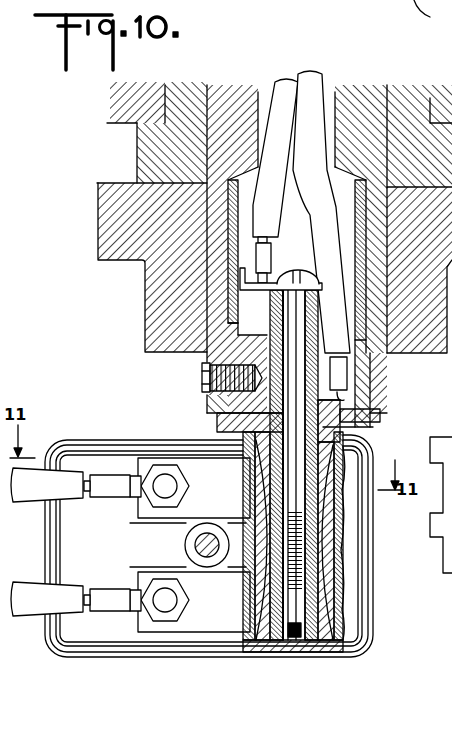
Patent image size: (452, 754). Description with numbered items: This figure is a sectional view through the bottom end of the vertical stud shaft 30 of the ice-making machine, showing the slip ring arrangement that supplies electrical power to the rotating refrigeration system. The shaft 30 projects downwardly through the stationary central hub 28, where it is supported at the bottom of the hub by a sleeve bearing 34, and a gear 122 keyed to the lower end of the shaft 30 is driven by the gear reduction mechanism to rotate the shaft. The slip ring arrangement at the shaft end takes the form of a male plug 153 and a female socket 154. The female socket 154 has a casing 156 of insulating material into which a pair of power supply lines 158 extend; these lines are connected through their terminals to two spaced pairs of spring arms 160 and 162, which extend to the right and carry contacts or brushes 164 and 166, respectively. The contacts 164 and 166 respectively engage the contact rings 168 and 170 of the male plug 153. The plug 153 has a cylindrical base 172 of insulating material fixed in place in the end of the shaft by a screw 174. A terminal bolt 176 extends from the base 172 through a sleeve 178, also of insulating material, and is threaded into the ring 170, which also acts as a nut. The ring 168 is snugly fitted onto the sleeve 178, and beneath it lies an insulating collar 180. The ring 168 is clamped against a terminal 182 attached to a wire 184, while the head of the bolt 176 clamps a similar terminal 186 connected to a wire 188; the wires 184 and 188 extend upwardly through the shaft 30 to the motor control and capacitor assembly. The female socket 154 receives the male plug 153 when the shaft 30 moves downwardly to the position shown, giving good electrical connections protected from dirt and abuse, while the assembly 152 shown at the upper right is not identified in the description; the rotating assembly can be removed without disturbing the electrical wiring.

The central hub 28 is at (137, 97).
The stud shaft 30 is at (239, 110).
The sleeve bearing 34 is at (152, 146).
The gear 122 is at (126, 231).
The assembly 152 is at (433, 13).
The male plug 153 is at (412, 424).
The female socket 154 is at (42, 649).
The casing 156 is at (96, 440).
The power supply lines 158 is at (32, 484).
The spring arms 160 is at (200, 505).
The spring arms 162 is at (200, 614).
The contact 164 is at (297, 498).
The contact 166 is at (306, 592).
The contact ring 168 is at (342, 430).
The contact ring 170 is at (319, 627).
The cylindrical base 172 is at (232, 345).
The screw 174 is at (206, 378).
The terminal bolt 176 is at (296, 308).
The sleeve 178 is at (264, 431).
The insulating collar 180 is at (305, 548).
The terminal 182 is at (340, 372).
The wire 184 is at (332, 208).
The terminal 186 is at (256, 258).
The wire 188 is at (233, 215).